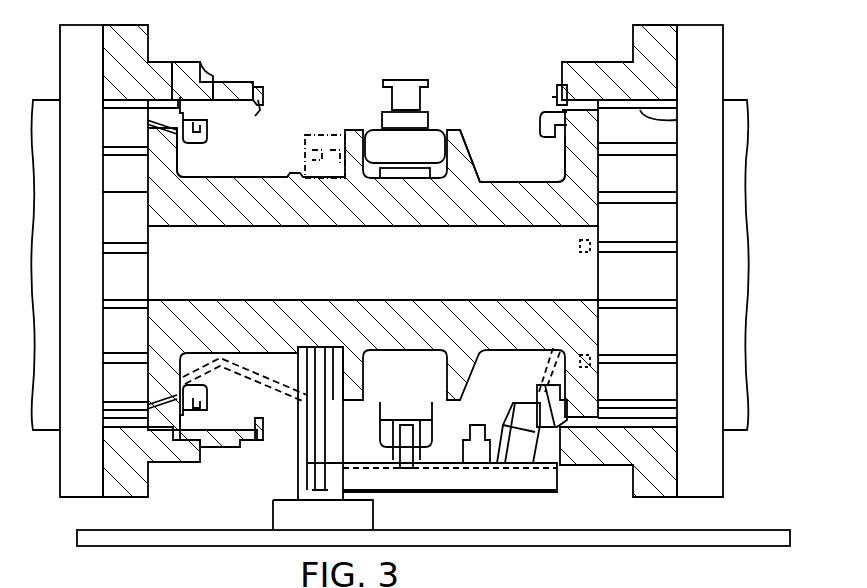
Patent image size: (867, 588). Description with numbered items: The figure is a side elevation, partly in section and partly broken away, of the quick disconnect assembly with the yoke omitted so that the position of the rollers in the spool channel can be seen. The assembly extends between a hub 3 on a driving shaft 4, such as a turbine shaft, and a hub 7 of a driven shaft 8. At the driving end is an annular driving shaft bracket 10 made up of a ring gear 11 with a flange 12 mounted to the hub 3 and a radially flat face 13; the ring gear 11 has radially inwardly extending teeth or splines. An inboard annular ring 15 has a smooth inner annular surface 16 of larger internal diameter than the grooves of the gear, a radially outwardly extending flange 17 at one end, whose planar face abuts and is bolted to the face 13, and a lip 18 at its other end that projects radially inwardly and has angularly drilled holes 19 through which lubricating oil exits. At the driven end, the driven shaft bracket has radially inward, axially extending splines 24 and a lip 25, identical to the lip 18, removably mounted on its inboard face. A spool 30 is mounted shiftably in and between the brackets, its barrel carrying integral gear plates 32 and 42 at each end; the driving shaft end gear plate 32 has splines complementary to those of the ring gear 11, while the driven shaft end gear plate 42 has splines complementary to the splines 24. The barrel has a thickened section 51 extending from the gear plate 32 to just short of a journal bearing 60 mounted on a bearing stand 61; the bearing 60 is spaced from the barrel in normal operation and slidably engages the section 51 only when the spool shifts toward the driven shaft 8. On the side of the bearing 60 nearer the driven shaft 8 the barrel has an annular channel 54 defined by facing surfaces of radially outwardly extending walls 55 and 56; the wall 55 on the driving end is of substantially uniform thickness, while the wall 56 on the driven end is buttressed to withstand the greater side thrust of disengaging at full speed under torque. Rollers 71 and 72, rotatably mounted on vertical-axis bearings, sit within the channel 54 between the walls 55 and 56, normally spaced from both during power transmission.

The hub 3 is at (71, 46).
The driving shaft 4 is at (44, 126).
The hub 7 is at (709, 50).
The driven shaft 8 is at (744, 125).
The driving shaft bracket 10 is at (160, 40).
The ring gear 11 is at (150, 70).
The flange 12 is at (123, 500).
The radially flat face 13 is at (208, 76).
The inboard annular ring 15 is at (236, 82).
The smooth inner annular surface 16 is at (230, 100).
The radially outwardly extending flange 17 is at (220, 74).
The lip 18 is at (264, 92).
The angularly drilled holes 19 is at (260, 103).
The splines 24 is at (645, 113).
The lip 25 is at (557, 90).
The spool 30 is at (543, 170).
The driving shaft end gear plate 32 is at (192, 373).
The driven shaft end gear plate 42 is at (562, 157).
The thickened section 51 is at (278, 180).
The annular channel 54 is at (374, 185).
The wall 55 is at (325, 142).
The wall 56 is at (462, 158).
The journal bearing 60 is at (305, 368).
The bearing stand 61 is at (313, 438).
The roller 71 is at (425, 140).
The roller 72 is at (428, 385).